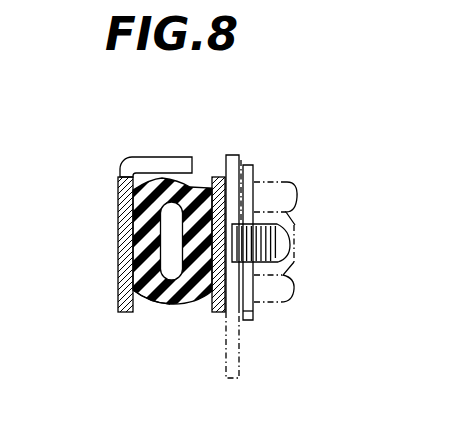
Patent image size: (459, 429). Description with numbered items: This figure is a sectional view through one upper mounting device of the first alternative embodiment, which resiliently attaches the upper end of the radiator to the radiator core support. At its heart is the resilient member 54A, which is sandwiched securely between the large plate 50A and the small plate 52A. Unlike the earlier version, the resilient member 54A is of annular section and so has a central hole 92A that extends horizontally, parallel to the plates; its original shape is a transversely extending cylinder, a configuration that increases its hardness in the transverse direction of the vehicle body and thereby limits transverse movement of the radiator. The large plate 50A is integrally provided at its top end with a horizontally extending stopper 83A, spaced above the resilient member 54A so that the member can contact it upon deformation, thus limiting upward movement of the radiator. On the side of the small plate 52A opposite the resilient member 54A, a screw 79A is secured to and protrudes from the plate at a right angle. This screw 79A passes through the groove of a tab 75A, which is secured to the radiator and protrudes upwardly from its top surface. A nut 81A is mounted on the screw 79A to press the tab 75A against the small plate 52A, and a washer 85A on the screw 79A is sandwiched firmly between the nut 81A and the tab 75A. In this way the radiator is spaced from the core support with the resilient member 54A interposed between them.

The large plate 50A is at (119, 235).
The small plate 52A is at (229, 186).
The resilient member 54A is at (181, 311).
The tab 75A is at (235, 332).
The screw 79A is at (276, 240).
The nut 81A is at (279, 293).
The stopper 83A is at (165, 165).
The washer 85A is at (252, 311).
The central hole 92A is at (147, 293).